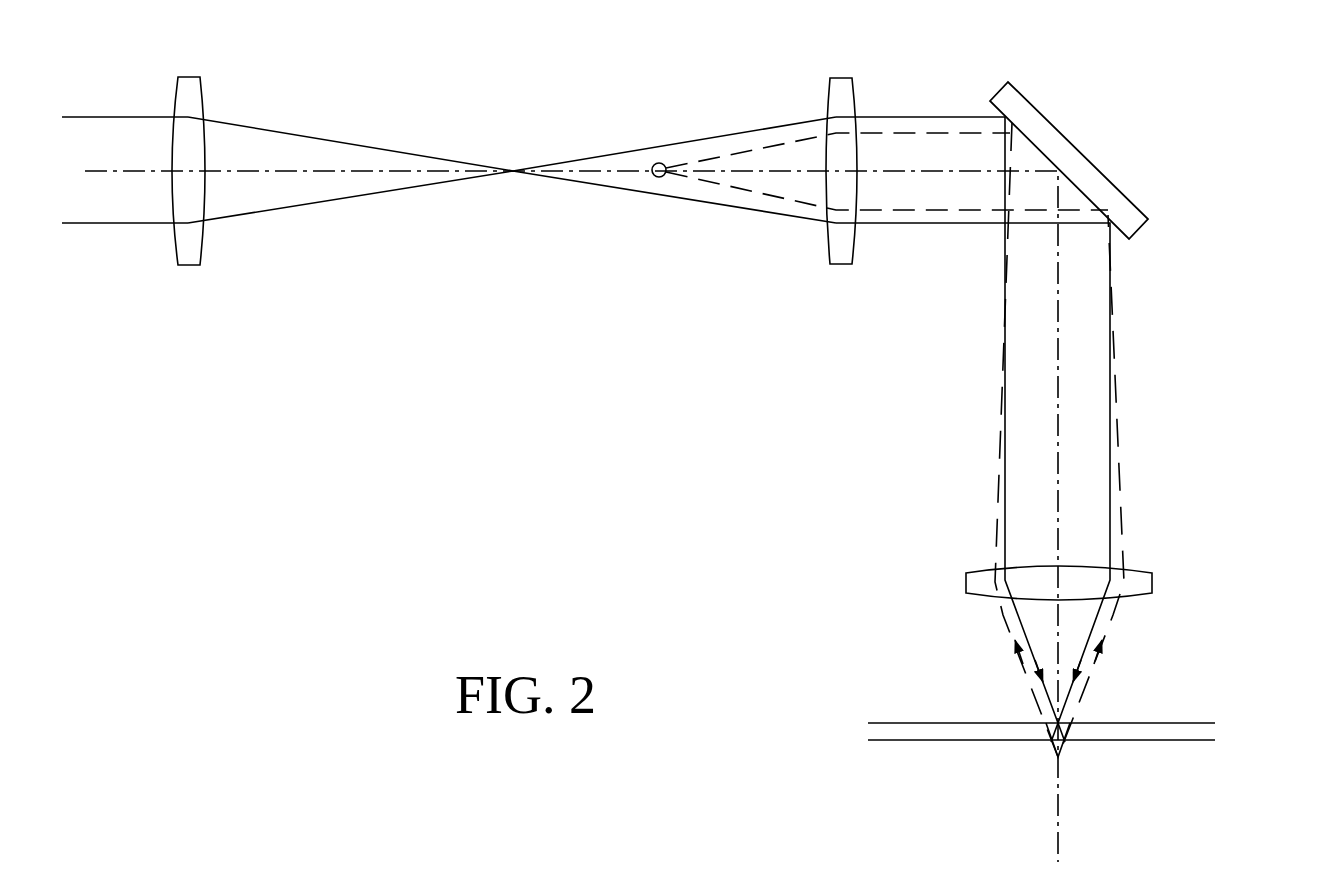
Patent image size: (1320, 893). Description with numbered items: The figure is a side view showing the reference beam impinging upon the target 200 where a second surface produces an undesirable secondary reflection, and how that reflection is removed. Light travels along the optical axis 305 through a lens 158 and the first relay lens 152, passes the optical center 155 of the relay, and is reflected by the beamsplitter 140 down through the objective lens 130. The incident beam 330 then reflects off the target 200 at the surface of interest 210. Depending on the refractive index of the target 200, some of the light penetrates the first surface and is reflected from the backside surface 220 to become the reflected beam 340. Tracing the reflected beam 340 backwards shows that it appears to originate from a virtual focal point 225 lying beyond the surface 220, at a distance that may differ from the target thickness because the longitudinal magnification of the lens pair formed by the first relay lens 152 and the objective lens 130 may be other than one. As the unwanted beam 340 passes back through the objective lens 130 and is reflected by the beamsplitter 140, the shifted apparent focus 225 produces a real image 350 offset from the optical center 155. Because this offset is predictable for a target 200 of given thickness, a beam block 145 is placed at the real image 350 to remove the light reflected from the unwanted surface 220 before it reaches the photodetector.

The objective lens 130 is at (1152, 581).
The beamsplitter 140 is at (1098, 170).
The beam block 145 is at (652, 155).
The first relay lens 152 is at (840, 77).
The optical center 155 is at (513, 170).
The lens 158 is at (189, 77).
The target 200 is at (1232, 732).
The target surface 210 is at (1160, 722).
The surface 220 is at (1160, 741).
The virtual focal point 225 is at (1058, 757).
The optical axis 305 is at (117, 172).
The incident beam 330 is at (1016, 619).
The reflected beam 340 is at (1095, 659).
The real image 350 is at (667, 172).